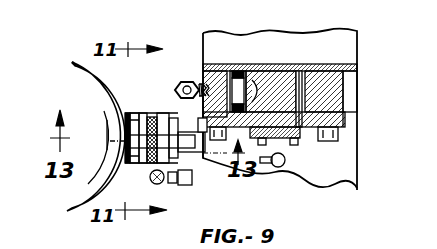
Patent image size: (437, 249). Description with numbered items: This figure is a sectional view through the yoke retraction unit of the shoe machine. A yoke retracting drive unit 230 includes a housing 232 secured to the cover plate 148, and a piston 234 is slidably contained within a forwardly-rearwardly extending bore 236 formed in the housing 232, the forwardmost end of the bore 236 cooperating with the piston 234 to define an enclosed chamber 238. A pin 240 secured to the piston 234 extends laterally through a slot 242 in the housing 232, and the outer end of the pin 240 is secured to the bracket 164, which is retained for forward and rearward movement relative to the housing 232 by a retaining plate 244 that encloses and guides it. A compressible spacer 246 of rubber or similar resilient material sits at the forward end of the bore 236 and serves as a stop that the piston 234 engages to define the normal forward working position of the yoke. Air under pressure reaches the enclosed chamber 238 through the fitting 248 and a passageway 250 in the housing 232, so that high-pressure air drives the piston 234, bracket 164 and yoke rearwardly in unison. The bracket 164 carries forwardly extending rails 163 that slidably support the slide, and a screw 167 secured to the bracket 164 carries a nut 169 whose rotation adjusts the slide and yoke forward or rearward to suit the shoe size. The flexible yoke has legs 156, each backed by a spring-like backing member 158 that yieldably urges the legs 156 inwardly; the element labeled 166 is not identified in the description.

The cover plate 148 is at (340, 160).
The yoke legs 156 is at (105, 115).
The backing member 158 is at (116, 92).
The rails 163 is at (133, 117).
The bracket 164 is at (162, 118).
The flange 166 is at (106, 124).
The screw 167 is at (188, 152).
The nut 169 is at (155, 180).
The yoke retracting drive unit 230 is at (305, 52).
The housing 232 is at (236, 70).
The piston 234 is at (335, 87).
The bore 236 is at (356, 106).
The enclosed chamber 238 is at (267, 68).
The pin 240 is at (318, 84).
The slot 242 is at (352, 128).
The retaining plate 244 is at (300, 146).
The compressible spacer 246 is at (210, 113).
The fitting 248 is at (184, 80).
The passageway 250 is at (226, 78).